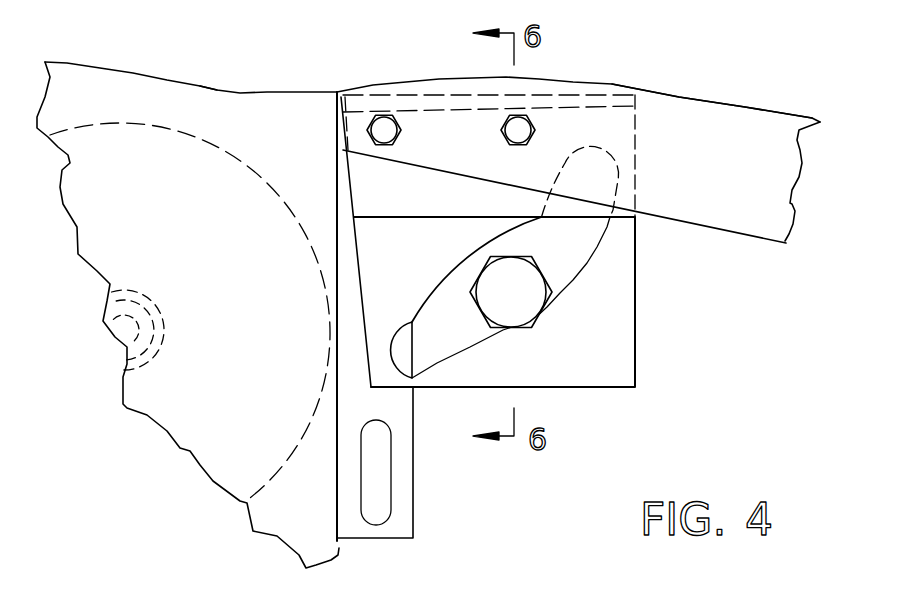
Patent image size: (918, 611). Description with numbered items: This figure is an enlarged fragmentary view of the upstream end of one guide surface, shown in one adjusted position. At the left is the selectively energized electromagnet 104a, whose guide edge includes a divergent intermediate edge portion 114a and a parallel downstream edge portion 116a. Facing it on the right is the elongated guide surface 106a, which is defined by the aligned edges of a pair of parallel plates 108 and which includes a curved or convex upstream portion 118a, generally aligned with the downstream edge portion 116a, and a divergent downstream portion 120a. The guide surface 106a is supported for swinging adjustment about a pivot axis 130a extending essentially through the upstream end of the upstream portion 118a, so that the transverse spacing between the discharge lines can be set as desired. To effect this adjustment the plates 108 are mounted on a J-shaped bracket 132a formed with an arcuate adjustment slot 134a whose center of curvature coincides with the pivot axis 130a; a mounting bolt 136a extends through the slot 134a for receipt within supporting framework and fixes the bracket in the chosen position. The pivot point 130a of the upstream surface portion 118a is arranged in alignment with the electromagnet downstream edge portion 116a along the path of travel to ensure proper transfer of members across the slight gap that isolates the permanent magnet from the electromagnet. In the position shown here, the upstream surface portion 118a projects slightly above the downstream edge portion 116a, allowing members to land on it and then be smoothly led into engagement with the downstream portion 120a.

The electromagnet 104a is at (187, 449).
The divergent intermediate edge portion 114a is at (72, 62).
The parallel downstream edge portion 116a is at (218, 90).
The pivot axis 130a is at (336, 91).
The plate 108 is at (729, 182).
The elongated guide surface 106a is at (706, 67).
The divergent downstream portion 120a is at (742, 104).
The upstream portion 118a is at (573, 79).
The J-shaped bracket 132a is at (635, 254).
The arcuate adjustment slot 134a is at (576, 258).
The mounting bolt 136a is at (527, 306).